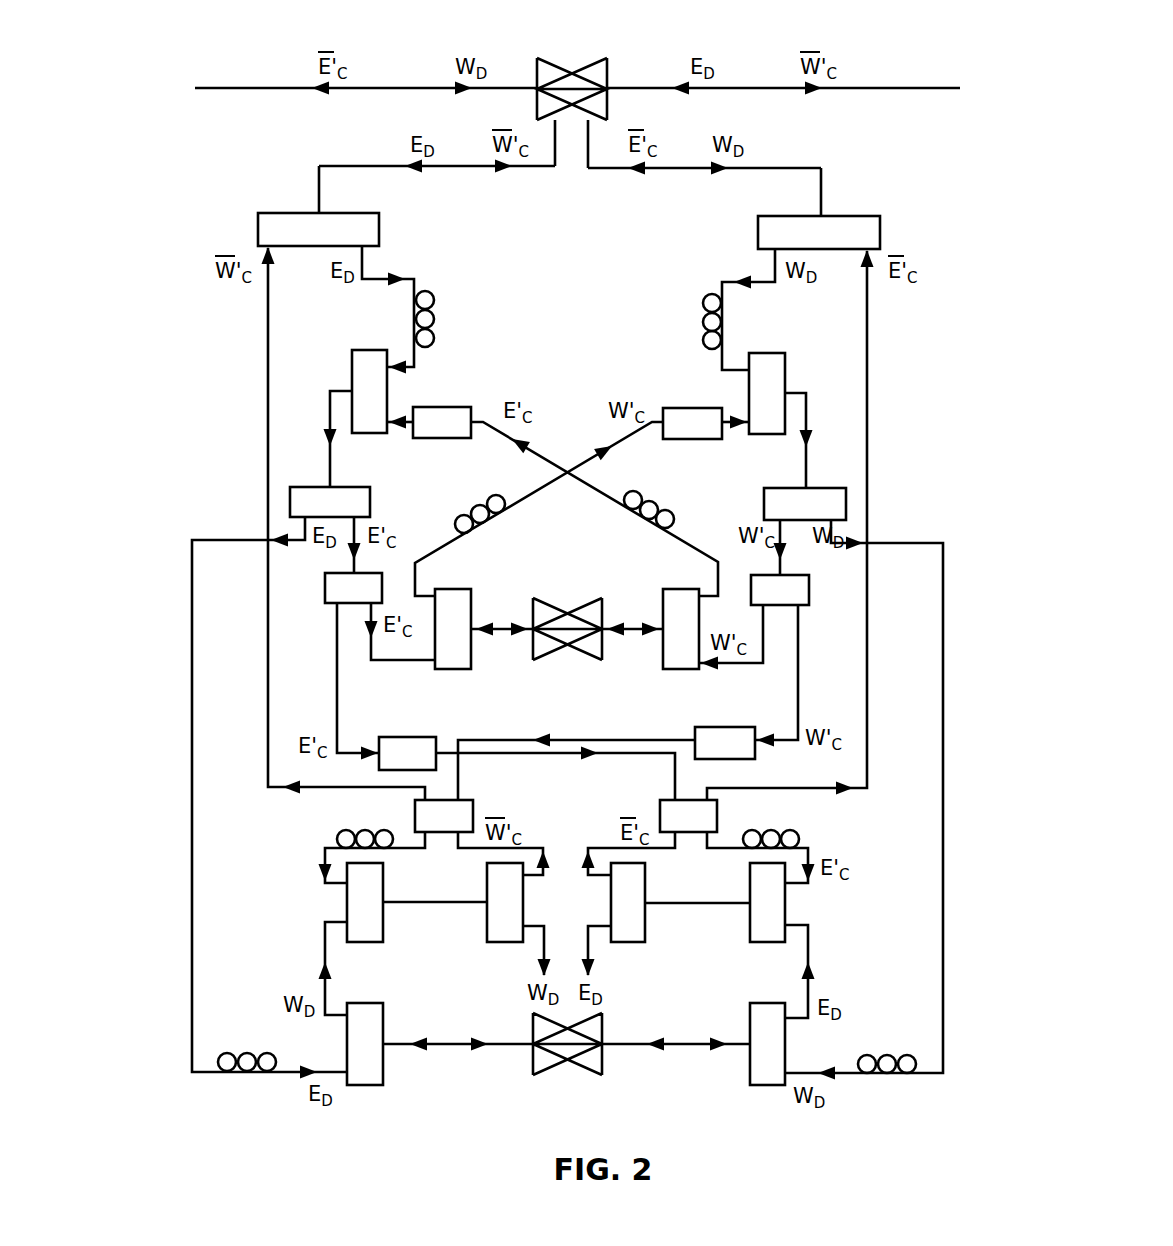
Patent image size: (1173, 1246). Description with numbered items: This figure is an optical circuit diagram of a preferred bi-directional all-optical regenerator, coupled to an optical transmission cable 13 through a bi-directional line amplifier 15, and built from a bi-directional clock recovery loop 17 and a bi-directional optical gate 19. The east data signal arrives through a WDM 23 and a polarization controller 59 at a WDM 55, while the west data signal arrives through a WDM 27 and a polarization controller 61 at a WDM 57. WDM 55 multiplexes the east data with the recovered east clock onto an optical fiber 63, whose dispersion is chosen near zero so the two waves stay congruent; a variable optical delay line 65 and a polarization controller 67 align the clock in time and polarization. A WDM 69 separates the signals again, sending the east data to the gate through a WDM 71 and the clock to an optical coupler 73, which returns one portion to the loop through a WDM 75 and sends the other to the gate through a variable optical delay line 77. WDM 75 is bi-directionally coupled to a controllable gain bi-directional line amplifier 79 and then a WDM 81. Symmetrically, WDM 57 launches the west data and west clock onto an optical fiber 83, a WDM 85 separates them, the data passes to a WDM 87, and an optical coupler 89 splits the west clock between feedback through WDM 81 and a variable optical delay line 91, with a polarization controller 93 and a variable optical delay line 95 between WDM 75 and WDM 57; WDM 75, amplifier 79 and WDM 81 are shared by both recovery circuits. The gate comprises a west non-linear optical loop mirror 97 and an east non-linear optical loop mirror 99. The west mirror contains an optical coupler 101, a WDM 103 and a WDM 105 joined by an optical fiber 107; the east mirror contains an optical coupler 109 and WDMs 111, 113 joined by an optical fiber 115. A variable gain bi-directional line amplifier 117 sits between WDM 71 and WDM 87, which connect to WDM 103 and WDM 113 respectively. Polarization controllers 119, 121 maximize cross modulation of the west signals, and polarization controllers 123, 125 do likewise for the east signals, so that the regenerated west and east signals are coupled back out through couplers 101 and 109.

The optical transmission cable 13 is at (866, 88).
The bi-directional line amplifier 15 is at (556, 68).
The bi-directional clock recovery loop 17 is at (895, 437).
The bi-directional optical gate 19 is at (957, 900).
The wavelength division multiplexer 23 is at (379, 230).
The wavelength division multiplexer 27 is at (880, 232).
The WDM 55 is at (362, 351).
The WDM 57 is at (768, 353).
The polarization controller 59 is at (433, 298).
The polarization controller 61 is at (703, 300).
The optical fiber 63 is at (329, 412).
The variable optical delay line 65 is at (452, 407).
The polarization controller 67 is at (645, 494).
The WDM 69 is at (355, 488).
The WDM 71 is at (365, 1086).
The optical coupler 73 is at (325, 591).
The WDM 75 is at (460, 670).
The variable optical delay line 77 is at (405, 738).
The controllable gain bi-directional line amplifier 79 is at (549, 606).
The WDM 81 is at (675, 670).
The optical fiber 83 is at (806, 414).
The WDM 85 is at (827, 489).
The WDM 87 is at (768, 1086).
The optical coupler 89 is at (809, 593).
The variable optical delay line 91 is at (726, 728).
The polarization controller 93 is at (490, 496).
The variable optical delay line 95 is at (683, 408).
The west non-linear optical loop mirror 97 is at (453, 884).
The east non-linear optical loop mirror 99 is at (696, 884).
The optical coupler 101 is at (473, 804).
The WDM 103 is at (373, 943).
The WDM 105 is at (503, 943).
The optical fiber 107 is at (458, 903).
The optical coupler 109 is at (717, 813).
The WDM 111 is at (628, 943).
The WDM 113 is at (757, 943).
The optical fiber 115 is at (680, 904).
The variable gain bi-directional line amplifier 117 is at (585, 1077).
The polarization controller 119 is at (862, 1057).
The polarization controller 121 is at (334, 831).
The polarization controller 123 is at (275, 1056).
The polarization controller 125 is at (800, 833).